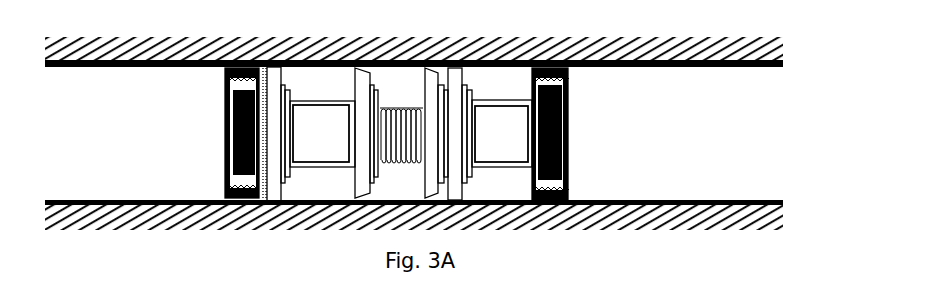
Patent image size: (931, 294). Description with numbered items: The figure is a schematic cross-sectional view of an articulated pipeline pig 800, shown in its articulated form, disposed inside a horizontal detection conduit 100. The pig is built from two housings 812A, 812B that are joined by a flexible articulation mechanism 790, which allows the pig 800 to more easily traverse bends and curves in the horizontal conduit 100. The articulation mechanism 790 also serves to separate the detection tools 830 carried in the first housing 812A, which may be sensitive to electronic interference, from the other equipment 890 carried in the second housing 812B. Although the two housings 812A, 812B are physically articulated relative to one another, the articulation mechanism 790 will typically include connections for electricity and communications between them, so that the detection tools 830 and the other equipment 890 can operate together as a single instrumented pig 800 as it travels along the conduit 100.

The horizontal conduit 100 is at (708, 72).
The pipeline pig 800 is at (144, 171).
The first housing 812A is at (301, 105).
The second housing 812B is at (493, 104).
The flexible articulation mechanism 790 is at (407, 101).
The detection tools 830 is at (321, 133).
The other equipment 890 is at (501, 134).